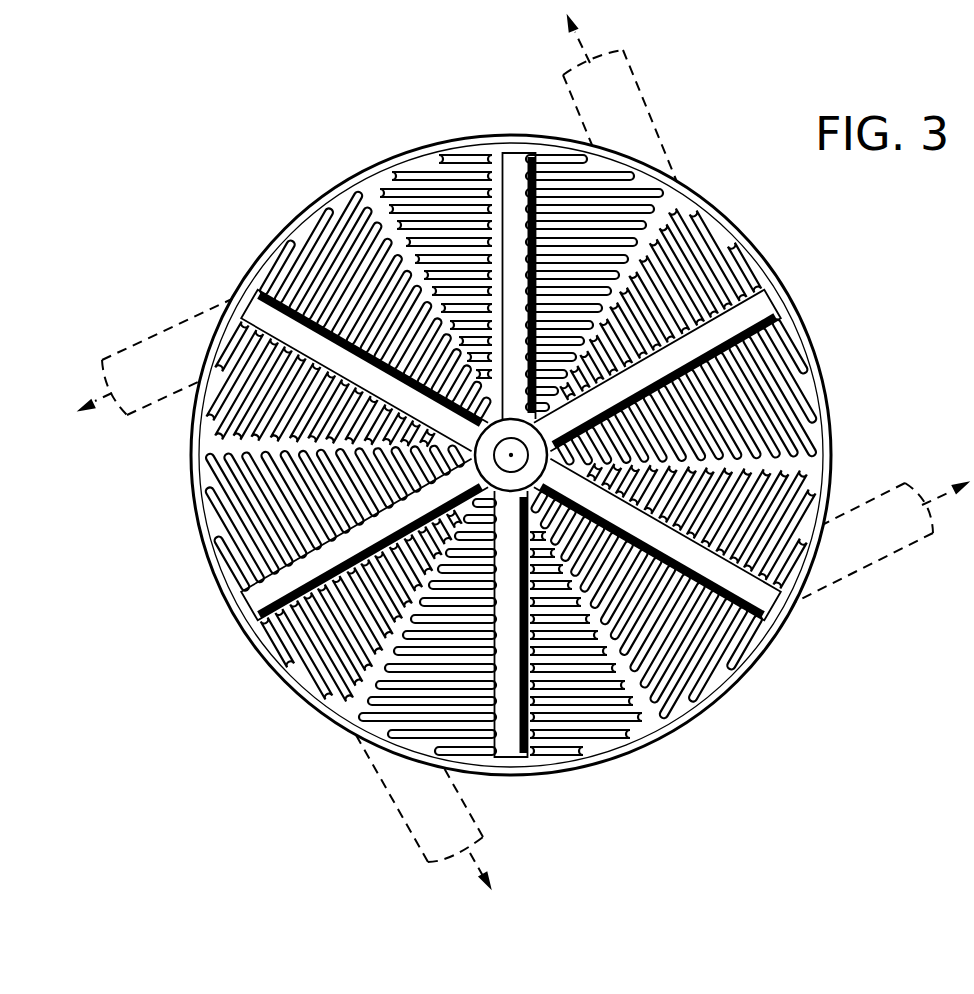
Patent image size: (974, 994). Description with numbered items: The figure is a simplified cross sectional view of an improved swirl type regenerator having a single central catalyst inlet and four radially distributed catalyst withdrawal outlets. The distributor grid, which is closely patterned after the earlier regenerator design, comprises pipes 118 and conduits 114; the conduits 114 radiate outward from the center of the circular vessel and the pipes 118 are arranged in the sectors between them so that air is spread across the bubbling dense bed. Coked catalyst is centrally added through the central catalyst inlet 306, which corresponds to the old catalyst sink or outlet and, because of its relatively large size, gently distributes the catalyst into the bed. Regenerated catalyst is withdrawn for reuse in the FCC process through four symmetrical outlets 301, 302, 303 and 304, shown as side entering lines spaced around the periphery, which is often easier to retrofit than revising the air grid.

The conduits 114 is at (522, 160).
The pipes 118 is at (395, 192).
The central catalyst inlet 306 is at (476, 440).
The catalyst outlet 301 is at (890, 558).
The catalyst outlet 302 is at (407, 826).
The catalyst outlet 303 is at (157, 332).
The catalyst outlet 304 is at (637, 83).